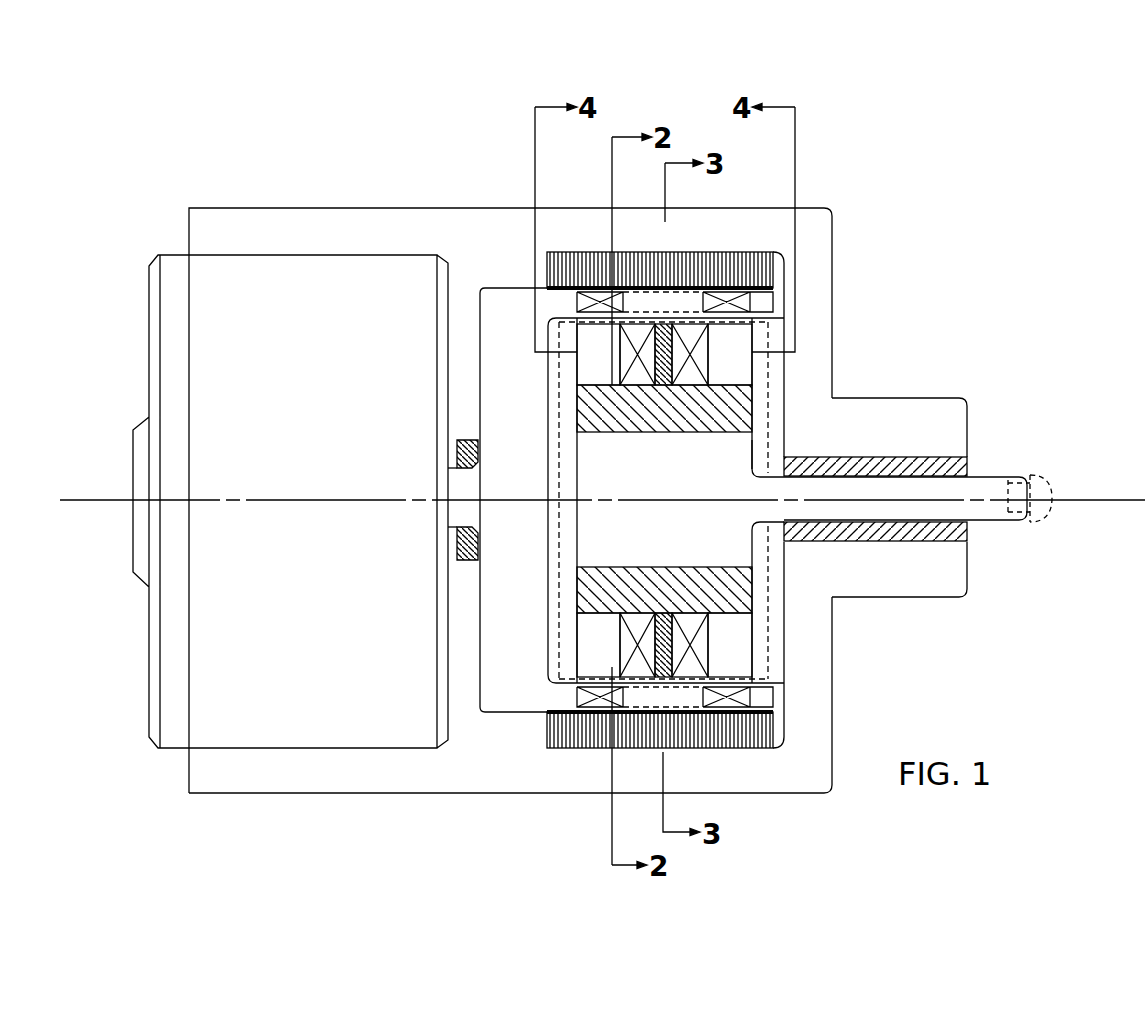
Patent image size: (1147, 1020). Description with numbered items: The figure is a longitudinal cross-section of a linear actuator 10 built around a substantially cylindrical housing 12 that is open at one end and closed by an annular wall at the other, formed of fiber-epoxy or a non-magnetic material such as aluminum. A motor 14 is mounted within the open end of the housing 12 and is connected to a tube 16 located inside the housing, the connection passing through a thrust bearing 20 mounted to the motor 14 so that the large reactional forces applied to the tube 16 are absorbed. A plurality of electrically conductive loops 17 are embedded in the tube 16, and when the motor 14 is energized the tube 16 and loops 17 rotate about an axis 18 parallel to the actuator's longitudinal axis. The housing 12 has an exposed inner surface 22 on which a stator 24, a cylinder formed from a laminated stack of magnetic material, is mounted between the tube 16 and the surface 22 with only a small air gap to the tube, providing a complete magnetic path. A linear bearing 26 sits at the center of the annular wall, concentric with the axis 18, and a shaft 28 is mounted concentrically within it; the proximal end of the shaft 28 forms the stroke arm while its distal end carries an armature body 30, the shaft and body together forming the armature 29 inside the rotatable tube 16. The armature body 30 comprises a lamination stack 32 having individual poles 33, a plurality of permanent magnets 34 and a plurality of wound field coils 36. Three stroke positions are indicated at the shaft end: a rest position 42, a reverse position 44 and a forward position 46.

The linear actuator 10 is at (703, 95).
The housing 12 is at (385, 207).
The motor 14 is at (144, 346).
The tube 16 is at (512, 288).
The electrically conductive loops 17 is at (748, 303).
The axis 18 is at (1100, 498).
The thrust bearing 20 is at (463, 439).
The inner surface 22 is at (492, 752).
The stator 24 is at (727, 748).
The linear bearing 26 is at (903, 455).
The shaft 28 is at (842, 507).
The armature 29 is at (760, 449).
The armature body 30 is at (562, 618).
The lamination stack 32 is at (612, 587).
The poles 33 is at (663, 634).
The permanent magnets 34 is at (586, 660).
The wound field coils 36 is at (700, 644).
The rest position 42 is at (1030, 507).
The reverse position 44 is at (558, 417).
The forward position 46 is at (785, 371).